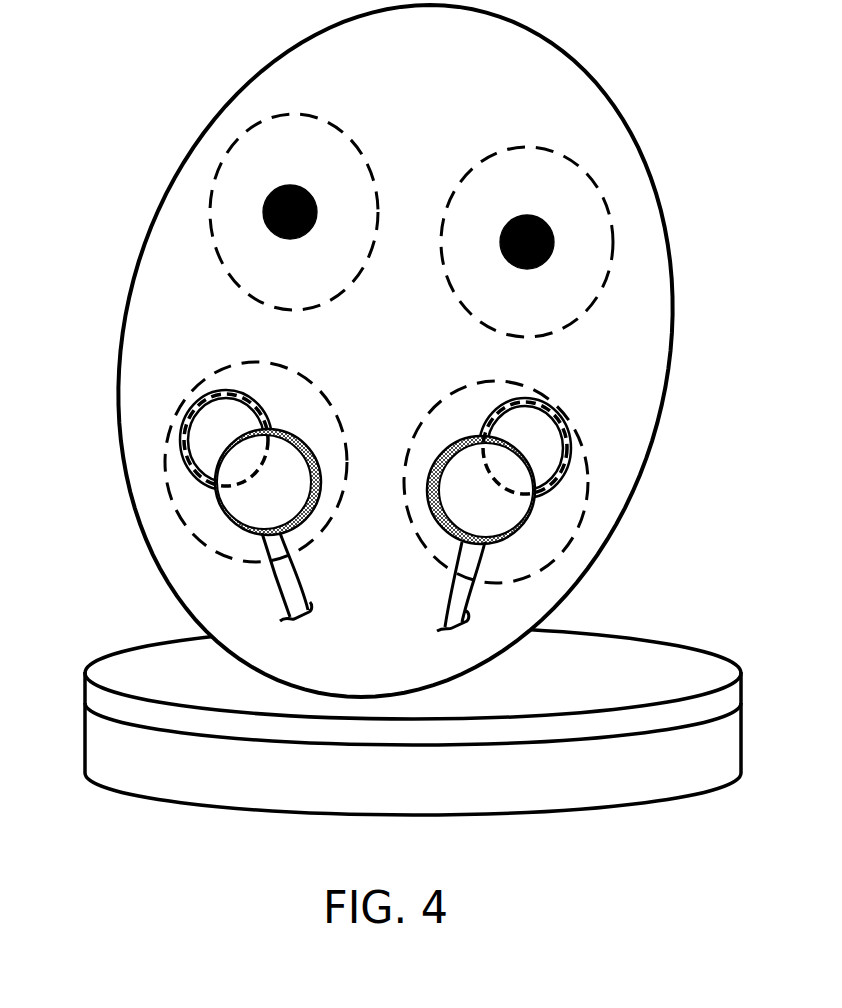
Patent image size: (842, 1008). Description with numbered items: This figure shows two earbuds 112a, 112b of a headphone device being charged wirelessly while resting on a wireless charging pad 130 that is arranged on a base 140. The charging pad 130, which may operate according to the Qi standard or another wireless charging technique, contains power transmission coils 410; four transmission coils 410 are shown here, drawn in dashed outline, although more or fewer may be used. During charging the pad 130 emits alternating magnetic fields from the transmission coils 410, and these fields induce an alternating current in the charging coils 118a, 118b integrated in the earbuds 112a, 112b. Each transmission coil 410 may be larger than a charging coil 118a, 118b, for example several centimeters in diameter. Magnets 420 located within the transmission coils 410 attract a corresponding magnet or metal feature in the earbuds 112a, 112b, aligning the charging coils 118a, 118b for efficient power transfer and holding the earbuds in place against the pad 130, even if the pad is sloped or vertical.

The wireless charging pad 130 is at (237, 93).
The base 140 is at (743, 722).
The power transmission coil 410 is at (318, 119).
The magnet 420 is at (296, 185).
The charging coil 118a is at (213, 393).
The charging coil 118b is at (569, 428).
The earbud 112a is at (268, 525).
The earbud 112b is at (481, 533).